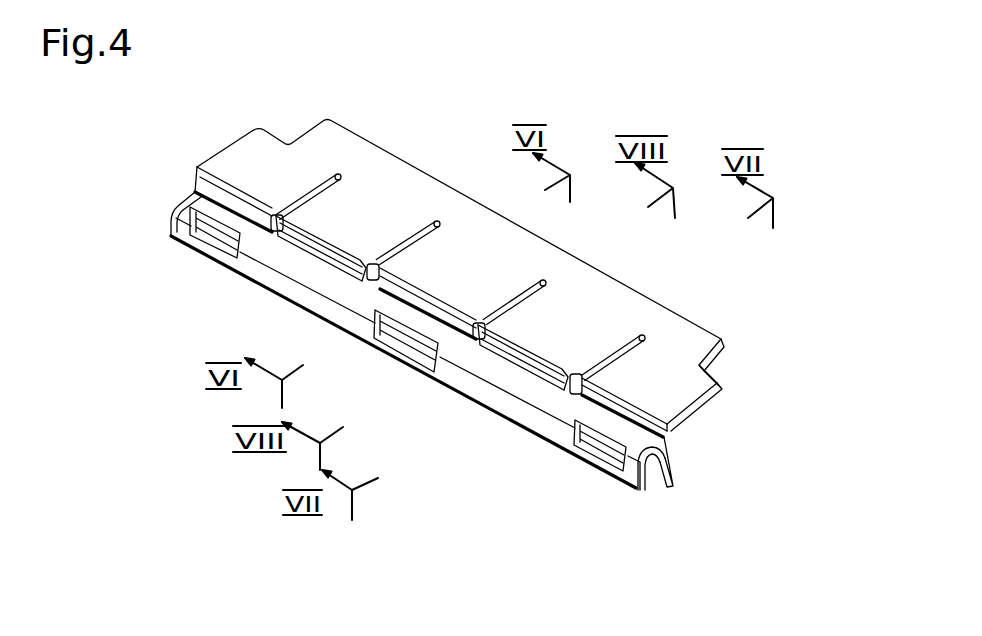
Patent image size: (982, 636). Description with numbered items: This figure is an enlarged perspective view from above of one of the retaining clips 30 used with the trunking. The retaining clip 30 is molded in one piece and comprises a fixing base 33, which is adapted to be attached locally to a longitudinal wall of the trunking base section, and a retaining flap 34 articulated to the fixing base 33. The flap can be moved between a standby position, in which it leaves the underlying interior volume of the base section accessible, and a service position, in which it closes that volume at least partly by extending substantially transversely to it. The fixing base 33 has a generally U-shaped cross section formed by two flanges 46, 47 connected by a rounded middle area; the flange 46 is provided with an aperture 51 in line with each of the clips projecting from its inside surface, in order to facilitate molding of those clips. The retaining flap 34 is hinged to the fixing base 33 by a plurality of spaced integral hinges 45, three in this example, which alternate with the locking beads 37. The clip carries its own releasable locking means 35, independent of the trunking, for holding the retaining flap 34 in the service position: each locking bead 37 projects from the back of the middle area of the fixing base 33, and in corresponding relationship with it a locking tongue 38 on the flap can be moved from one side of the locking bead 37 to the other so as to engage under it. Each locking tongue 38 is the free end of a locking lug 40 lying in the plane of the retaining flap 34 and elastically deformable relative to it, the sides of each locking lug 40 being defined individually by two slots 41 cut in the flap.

The retaining clip 30 is at (763, 446).
The fixing base 33 is at (636, 498).
The retaining flap 34 is at (731, 326).
The releasable locking means 35 is at (353, 239).
The locking bead 37 is at (327, 260).
The locking tongue 38 is at (250, 272).
The locking lug 40 is at (368, 290).
The slot 41 is at (330, 170).
The integral hinge 45 is at (200, 181).
The flange 46 is at (638, 496).
The flange 47 is at (670, 483).
The aperture 51 is at (195, 238).